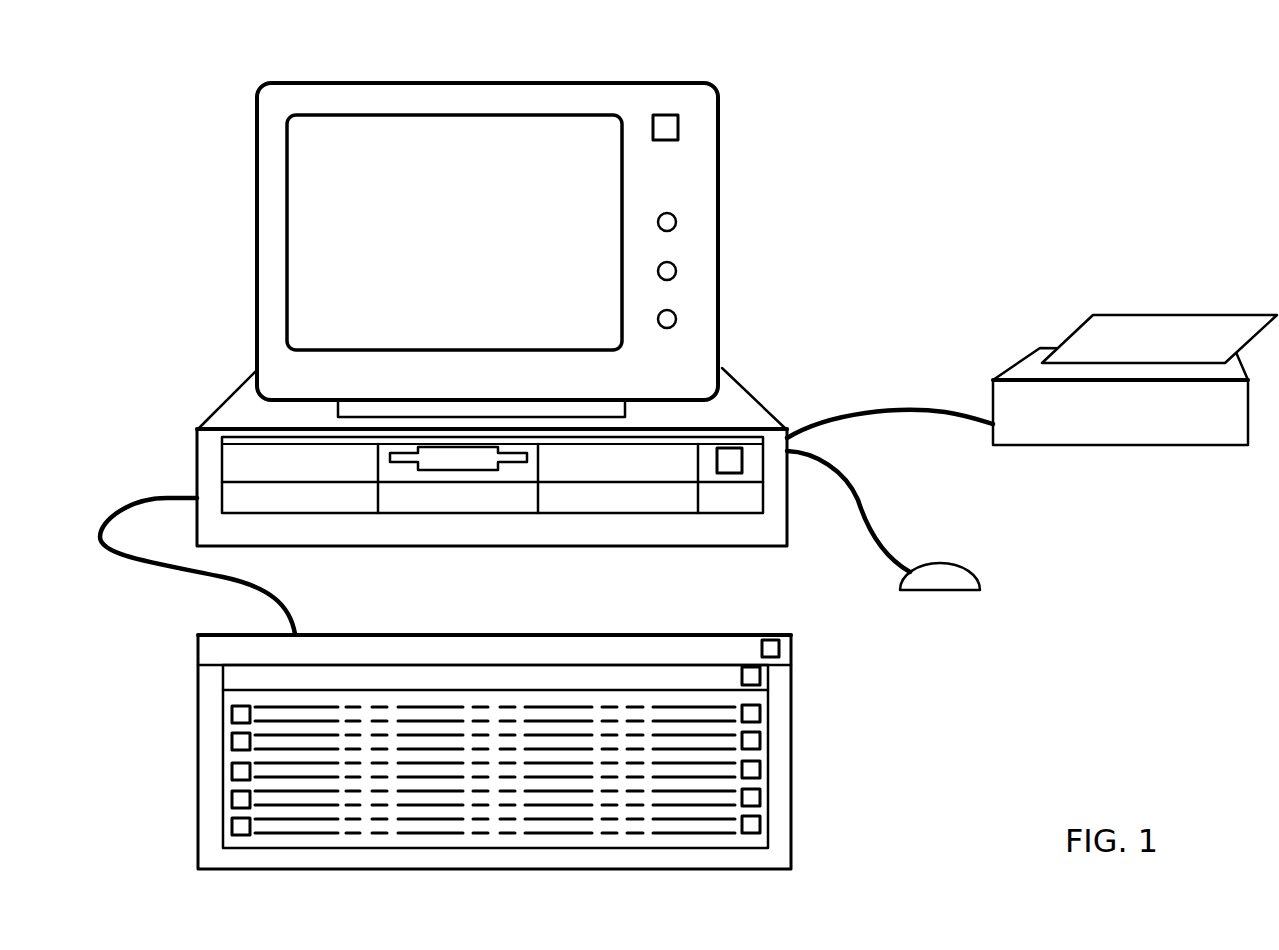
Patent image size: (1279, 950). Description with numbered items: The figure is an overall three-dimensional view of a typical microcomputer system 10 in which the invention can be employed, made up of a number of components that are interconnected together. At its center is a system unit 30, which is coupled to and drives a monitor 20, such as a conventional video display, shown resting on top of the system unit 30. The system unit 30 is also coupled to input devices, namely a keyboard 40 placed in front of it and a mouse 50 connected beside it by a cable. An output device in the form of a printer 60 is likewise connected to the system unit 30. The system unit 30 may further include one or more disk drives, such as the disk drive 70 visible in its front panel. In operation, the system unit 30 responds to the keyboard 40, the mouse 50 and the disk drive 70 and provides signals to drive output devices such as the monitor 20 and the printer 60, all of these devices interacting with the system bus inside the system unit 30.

The microcomputer system 10 is at (832, 128).
The monitor 20 is at (515, 83).
The system unit 30 is at (750, 387).
The keyboard 40 is at (793, 782).
The mouse 50 is at (940, 562).
The printer 60 is at (1100, 447).
The disk drive 70 is at (410, 467).